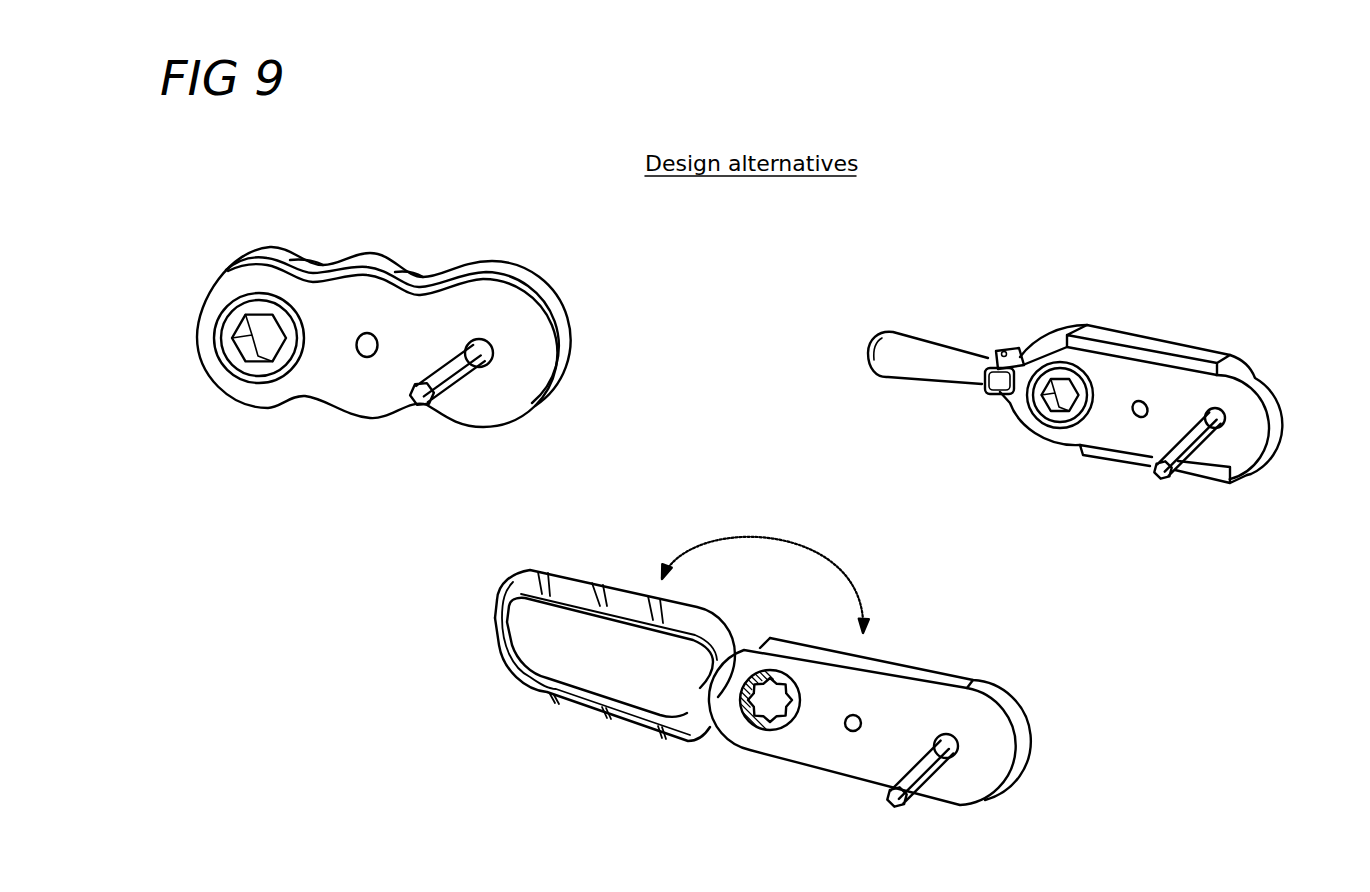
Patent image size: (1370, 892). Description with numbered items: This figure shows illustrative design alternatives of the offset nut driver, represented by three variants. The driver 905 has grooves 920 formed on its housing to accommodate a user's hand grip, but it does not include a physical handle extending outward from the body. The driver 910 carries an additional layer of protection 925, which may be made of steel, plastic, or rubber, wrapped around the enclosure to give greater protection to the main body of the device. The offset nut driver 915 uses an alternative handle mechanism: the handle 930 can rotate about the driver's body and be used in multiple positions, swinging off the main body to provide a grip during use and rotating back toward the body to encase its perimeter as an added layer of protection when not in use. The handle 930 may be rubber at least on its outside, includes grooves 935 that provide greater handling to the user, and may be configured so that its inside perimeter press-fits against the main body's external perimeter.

The driver 905 is at (564, 313).
The grooves 920 is at (422, 280).
The driver 910 is at (1272, 388).
The additional layer of protection 925 is at (1150, 344).
The handle 930 is at (507, 582).
The grooves 935 is at (541, 574).
The offset nut driver 915 is at (1020, 722).